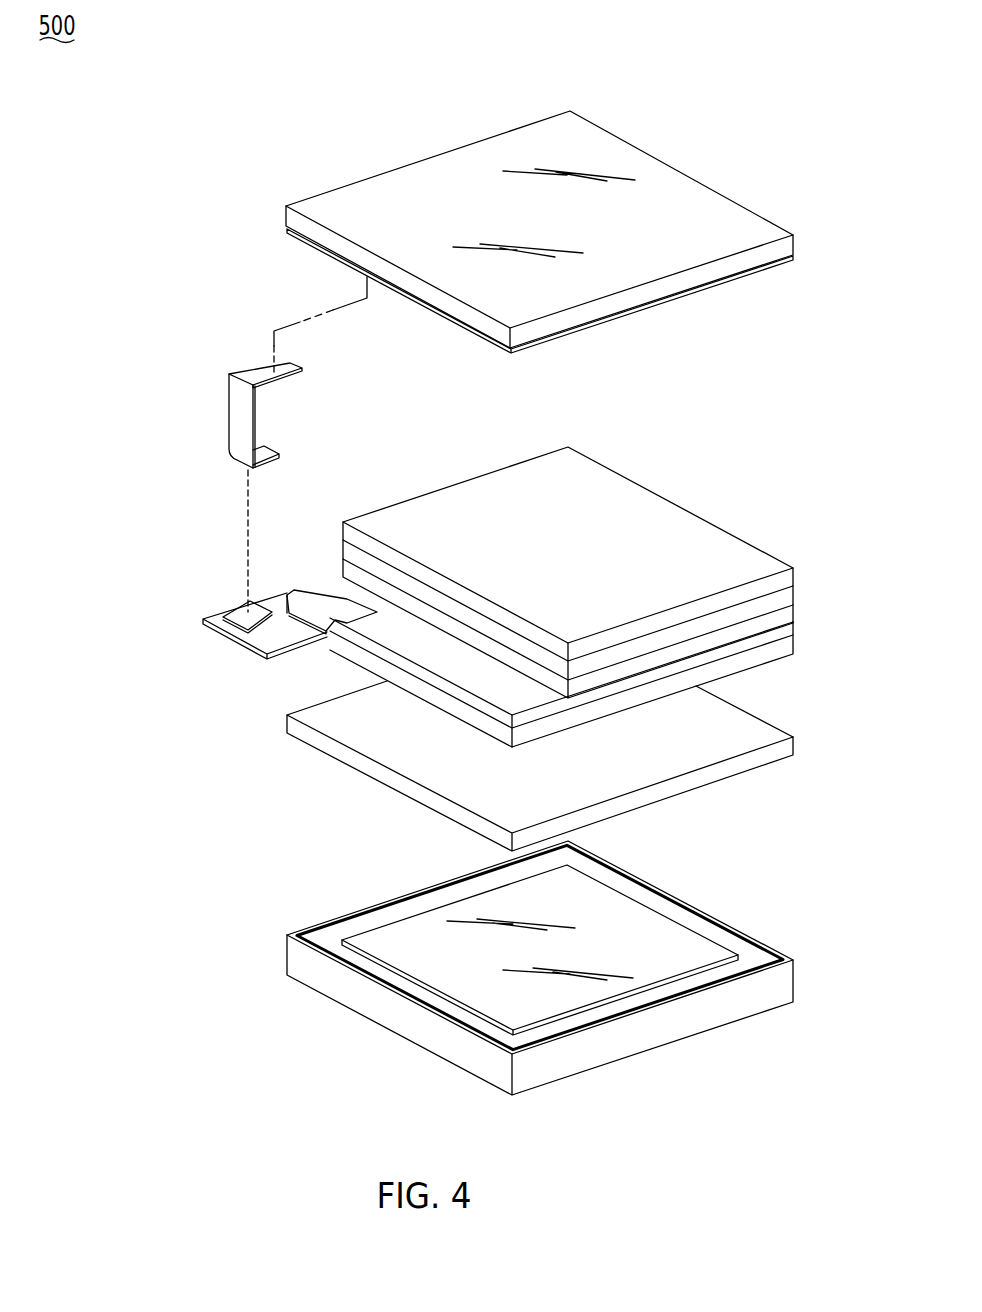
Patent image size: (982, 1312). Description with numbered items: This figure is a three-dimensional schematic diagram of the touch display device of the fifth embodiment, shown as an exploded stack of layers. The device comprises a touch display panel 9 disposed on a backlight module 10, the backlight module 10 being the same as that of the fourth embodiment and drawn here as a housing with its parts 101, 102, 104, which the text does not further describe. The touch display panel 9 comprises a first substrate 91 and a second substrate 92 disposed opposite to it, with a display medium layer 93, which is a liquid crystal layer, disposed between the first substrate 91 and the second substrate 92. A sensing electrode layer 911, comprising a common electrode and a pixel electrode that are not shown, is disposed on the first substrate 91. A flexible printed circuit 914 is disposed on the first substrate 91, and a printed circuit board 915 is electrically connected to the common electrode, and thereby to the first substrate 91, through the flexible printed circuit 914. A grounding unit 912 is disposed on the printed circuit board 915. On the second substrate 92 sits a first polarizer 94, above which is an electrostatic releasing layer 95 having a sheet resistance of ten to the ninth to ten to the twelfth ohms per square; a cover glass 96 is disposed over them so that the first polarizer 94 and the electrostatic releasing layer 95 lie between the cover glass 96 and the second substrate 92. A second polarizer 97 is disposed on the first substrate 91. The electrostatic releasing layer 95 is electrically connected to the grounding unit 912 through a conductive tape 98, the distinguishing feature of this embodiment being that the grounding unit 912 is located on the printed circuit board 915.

The touch display panel 9 is at (124, 190).
The backlight module 10 is at (138, 888).
The cover glass 96 is at (295, 216).
The electrostatic releasing layer 95 is at (293, 232).
The conductive tape 98 is at (233, 425).
The first polarizer 94 is at (343, 531).
The second substrate 92 is at (343, 550).
The display medium layer 93 is at (343, 568).
The first substrate 91 is at (468, 645).
The sensing electrode layer 911 is at (318, 637).
The grounding unit 912 is at (240, 612).
The flexible printed circuit 914 is at (318, 588).
The printed circuit board 915 is at (205, 620).
The second polarizer 97 is at (318, 719).
The housing body 101 is at (303, 972).
The frame rim 102 is at (290, 935).
The bottom panel 104 is at (383, 933).